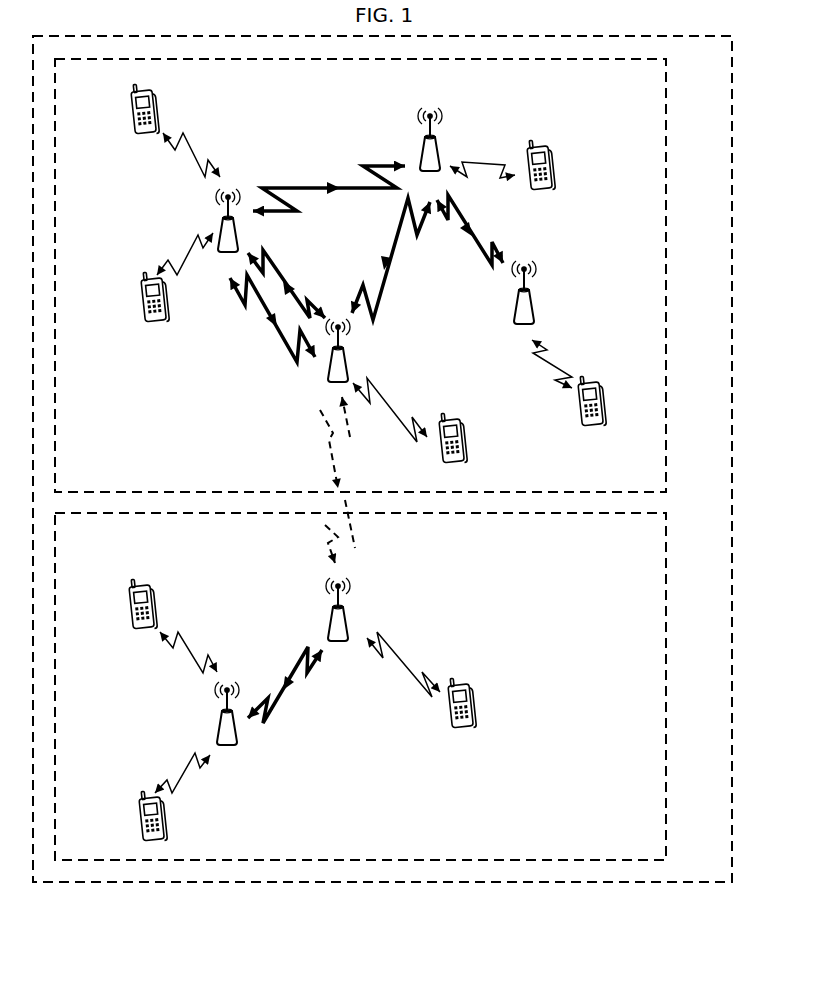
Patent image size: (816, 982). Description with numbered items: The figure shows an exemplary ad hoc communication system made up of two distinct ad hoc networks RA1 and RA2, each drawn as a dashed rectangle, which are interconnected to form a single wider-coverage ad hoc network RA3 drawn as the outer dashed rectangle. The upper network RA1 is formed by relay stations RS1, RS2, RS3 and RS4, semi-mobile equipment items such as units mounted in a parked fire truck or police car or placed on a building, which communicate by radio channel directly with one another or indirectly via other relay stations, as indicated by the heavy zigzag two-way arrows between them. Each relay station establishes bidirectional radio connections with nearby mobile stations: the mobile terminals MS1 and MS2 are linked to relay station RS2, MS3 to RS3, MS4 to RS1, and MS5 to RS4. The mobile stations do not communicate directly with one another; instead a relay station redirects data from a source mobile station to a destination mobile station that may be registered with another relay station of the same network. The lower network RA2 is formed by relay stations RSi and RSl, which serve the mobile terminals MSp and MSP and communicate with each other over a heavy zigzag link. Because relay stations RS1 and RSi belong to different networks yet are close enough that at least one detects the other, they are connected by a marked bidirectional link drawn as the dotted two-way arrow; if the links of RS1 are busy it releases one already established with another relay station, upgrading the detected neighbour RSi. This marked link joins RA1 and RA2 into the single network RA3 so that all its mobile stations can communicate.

The mobile station MS1 is at (128, 112).
The mobile station MS2 is at (138, 304).
The mobile station MS3 is at (570, 172).
The mobile station MS4 is at (483, 452).
The mobile station MS5 is at (625, 409).
The mobile station MSp is at (128, 617).
The mobile station MSP is at (162, 830).
The relay station RS1 is at (372, 362).
The relay station RS2 is at (238, 240).
The relay station RS3 is at (420, 152).
The relay station RS4 is at (512, 307).
The relay station RSi is at (330, 613).
The relay station RSl is at (218, 722).
The ad hoc network RA1 is at (690, 253).
The ad hoc network RA2 is at (688, 690).
The single ad hoc network RA3 is at (361, 883).